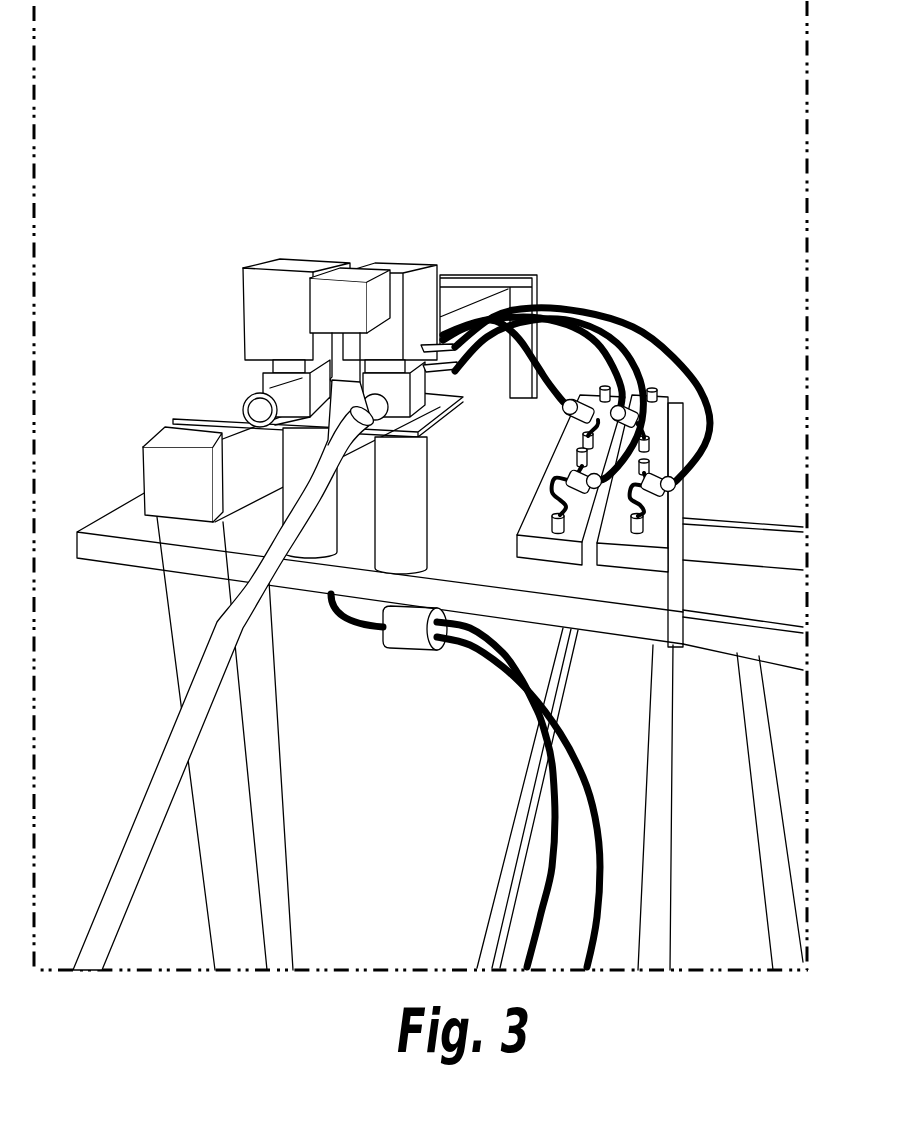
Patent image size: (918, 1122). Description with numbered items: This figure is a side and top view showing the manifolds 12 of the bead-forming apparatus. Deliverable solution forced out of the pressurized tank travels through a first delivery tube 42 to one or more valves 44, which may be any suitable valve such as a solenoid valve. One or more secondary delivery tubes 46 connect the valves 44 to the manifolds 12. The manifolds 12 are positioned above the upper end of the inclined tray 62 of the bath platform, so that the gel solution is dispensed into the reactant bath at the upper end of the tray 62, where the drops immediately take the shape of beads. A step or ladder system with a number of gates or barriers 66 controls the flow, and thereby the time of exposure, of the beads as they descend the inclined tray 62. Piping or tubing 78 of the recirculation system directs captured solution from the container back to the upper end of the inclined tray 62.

The manifolds 12 is at (548, 500).
The first delivery tube 42 is at (182, 736).
The valves 44 is at (337, 304).
The secondary delivery tubes 46 is at (655, 368).
The inclined tray 62 is at (715, 633).
The gates or barriers 66 is at (776, 870).
The piping or tubing 78 is at (542, 880).